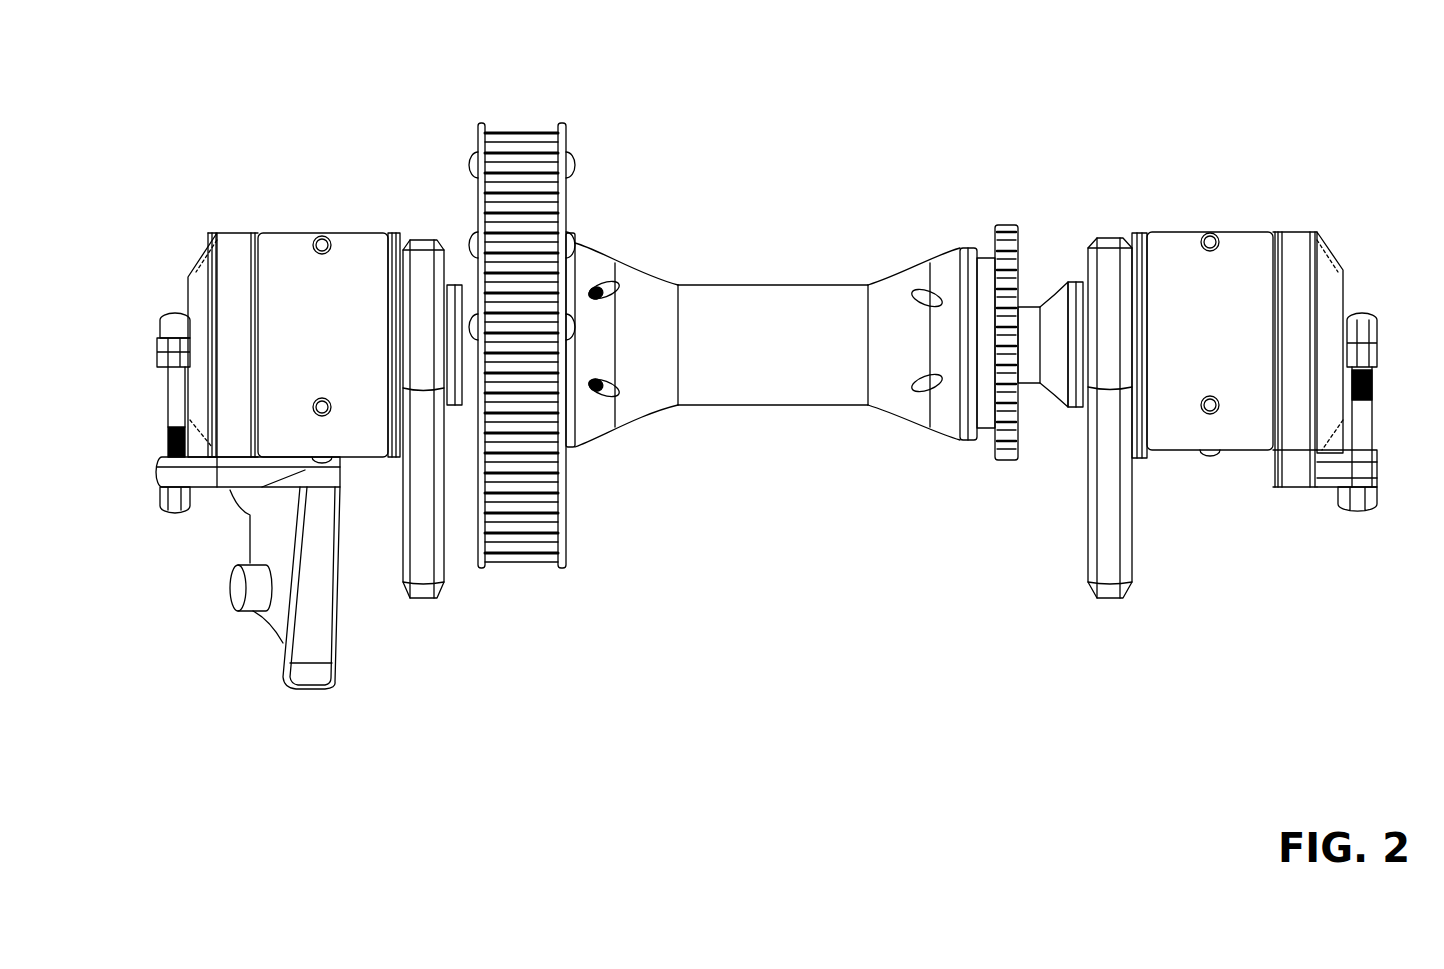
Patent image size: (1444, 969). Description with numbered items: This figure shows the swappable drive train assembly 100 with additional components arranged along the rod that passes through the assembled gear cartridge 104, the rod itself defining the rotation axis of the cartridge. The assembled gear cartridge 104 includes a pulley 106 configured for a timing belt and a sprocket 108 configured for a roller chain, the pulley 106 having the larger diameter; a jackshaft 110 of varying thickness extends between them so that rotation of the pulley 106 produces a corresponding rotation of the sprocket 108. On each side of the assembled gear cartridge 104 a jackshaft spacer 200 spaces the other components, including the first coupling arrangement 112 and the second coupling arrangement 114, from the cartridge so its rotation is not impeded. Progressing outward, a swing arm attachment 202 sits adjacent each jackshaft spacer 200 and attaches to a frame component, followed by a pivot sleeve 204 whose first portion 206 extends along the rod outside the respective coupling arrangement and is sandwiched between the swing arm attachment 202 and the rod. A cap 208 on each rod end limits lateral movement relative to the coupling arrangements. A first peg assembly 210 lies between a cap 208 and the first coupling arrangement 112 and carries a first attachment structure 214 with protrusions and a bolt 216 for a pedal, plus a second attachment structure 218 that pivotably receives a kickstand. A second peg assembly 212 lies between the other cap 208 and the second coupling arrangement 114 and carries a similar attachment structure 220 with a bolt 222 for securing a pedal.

The swappable drive train assembly 100 is at (1170, 73).
The assembled gear cartridge 104 is at (817, 158).
The pulley 106 is at (530, 568).
The sprocket 108 is at (1003, 458).
The jackshaft 110 is at (745, 283).
The first coupling arrangement 112 is at (1228, 200).
The second coupling arrangement 114 is at (290, 212).
The jackshaft spacer 200 is at (457, 283).
The swing arm attachment 202 is at (433, 622).
The pivot sleeve 204 is at (326, 205).
The first portion 206 is at (393, 395).
The cap 208 is at (200, 293).
The first peg assembly 210 is at (353, 670).
The second peg assembly 212 is at (1318, 507).
The first attachment structure 214 is at (128, 417).
The bolt 216 is at (174, 448).
The second attachment structure 218 is at (217, 612).
The attachment structure 220 is at (1384, 380).
The bolt 222 is at (1353, 427).